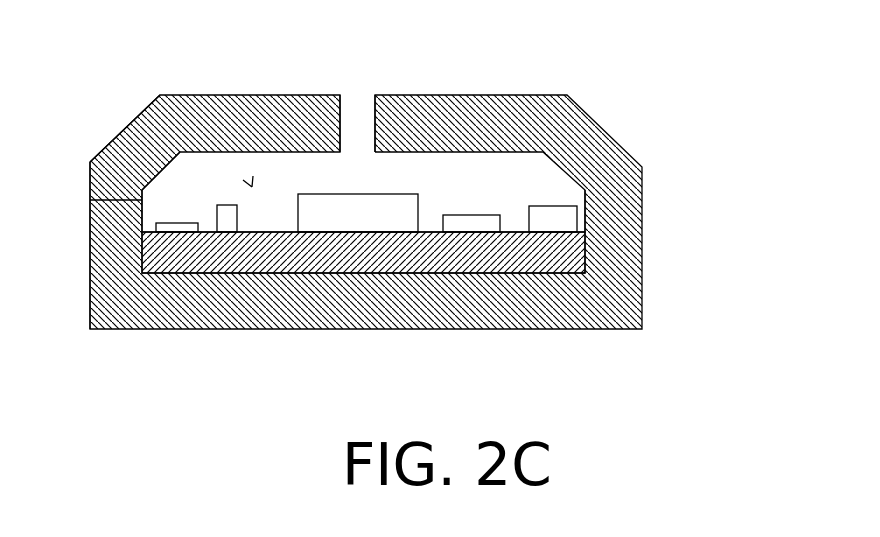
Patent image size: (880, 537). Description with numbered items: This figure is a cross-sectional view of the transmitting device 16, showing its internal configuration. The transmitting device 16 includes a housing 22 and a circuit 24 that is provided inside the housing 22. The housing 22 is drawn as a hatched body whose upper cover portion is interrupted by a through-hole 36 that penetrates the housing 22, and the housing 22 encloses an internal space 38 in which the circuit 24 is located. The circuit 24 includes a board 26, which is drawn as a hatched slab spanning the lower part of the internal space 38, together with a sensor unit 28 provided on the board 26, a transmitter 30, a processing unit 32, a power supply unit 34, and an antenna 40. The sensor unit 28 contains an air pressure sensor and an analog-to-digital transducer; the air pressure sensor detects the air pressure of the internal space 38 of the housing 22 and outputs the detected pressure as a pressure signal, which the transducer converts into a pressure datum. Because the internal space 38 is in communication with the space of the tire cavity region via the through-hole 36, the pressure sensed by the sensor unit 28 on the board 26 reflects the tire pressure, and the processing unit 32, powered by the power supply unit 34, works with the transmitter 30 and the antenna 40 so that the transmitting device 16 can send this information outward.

The transmitting device 16 is at (718, 75).
The housing 22 is at (178, 95).
The circuit 24 is at (252, 187).
The board 26 is at (427, 273).
The sensor unit 28 is at (332, 194).
The transmitter 30 is at (140, 137).
The processing unit 32 is at (477, 215).
The power supply unit 34 is at (555, 206).
The through-hole 36 is at (355, 117).
The internal space 38 is at (440, 168).
The antenna 40 is at (90, 197).